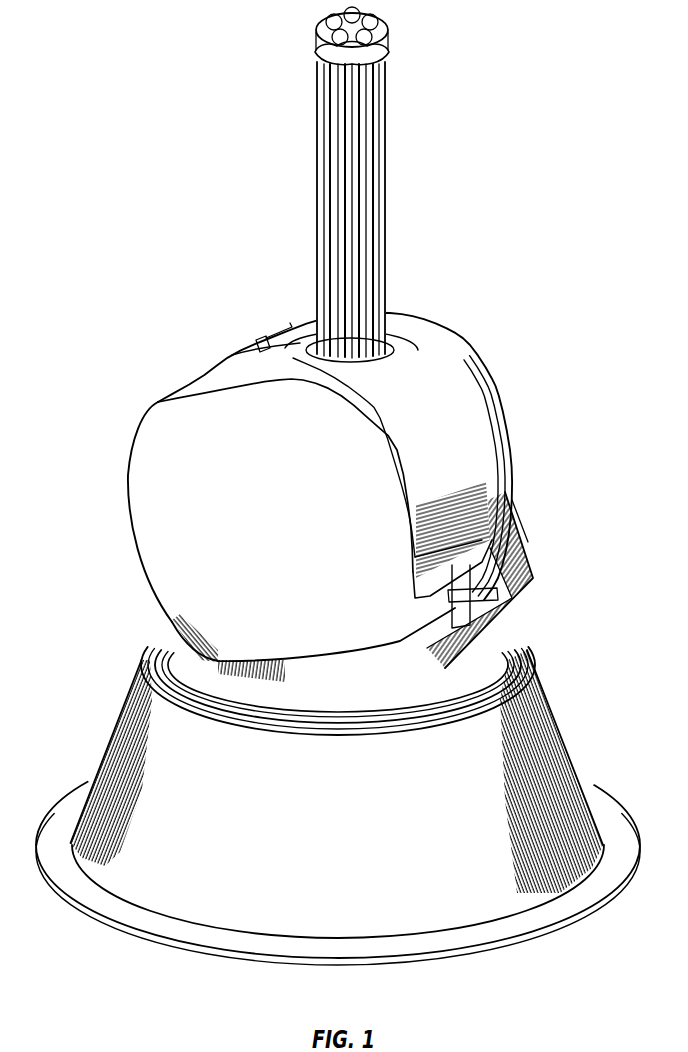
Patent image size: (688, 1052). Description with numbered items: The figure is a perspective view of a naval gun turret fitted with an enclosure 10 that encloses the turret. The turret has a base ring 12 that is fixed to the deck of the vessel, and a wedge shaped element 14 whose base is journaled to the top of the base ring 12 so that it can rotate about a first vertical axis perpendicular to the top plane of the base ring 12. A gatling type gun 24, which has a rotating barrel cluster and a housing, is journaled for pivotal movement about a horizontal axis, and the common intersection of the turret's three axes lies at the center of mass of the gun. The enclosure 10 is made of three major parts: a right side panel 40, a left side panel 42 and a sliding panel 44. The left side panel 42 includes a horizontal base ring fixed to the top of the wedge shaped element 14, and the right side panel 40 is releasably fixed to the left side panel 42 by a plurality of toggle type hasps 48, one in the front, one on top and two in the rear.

The enclosure 10 is at (175, 398).
The base ring 12 is at (560, 749).
The wedge shaped element 14 is at (517, 601).
The gatling type gun 24 is at (383, 172).
The right side panel 40 is at (143, 540).
The left side panel 42 is at (531, 576).
The sliding panel 44 is at (460, 413).
The toggle type hasps 48 is at (261, 340).